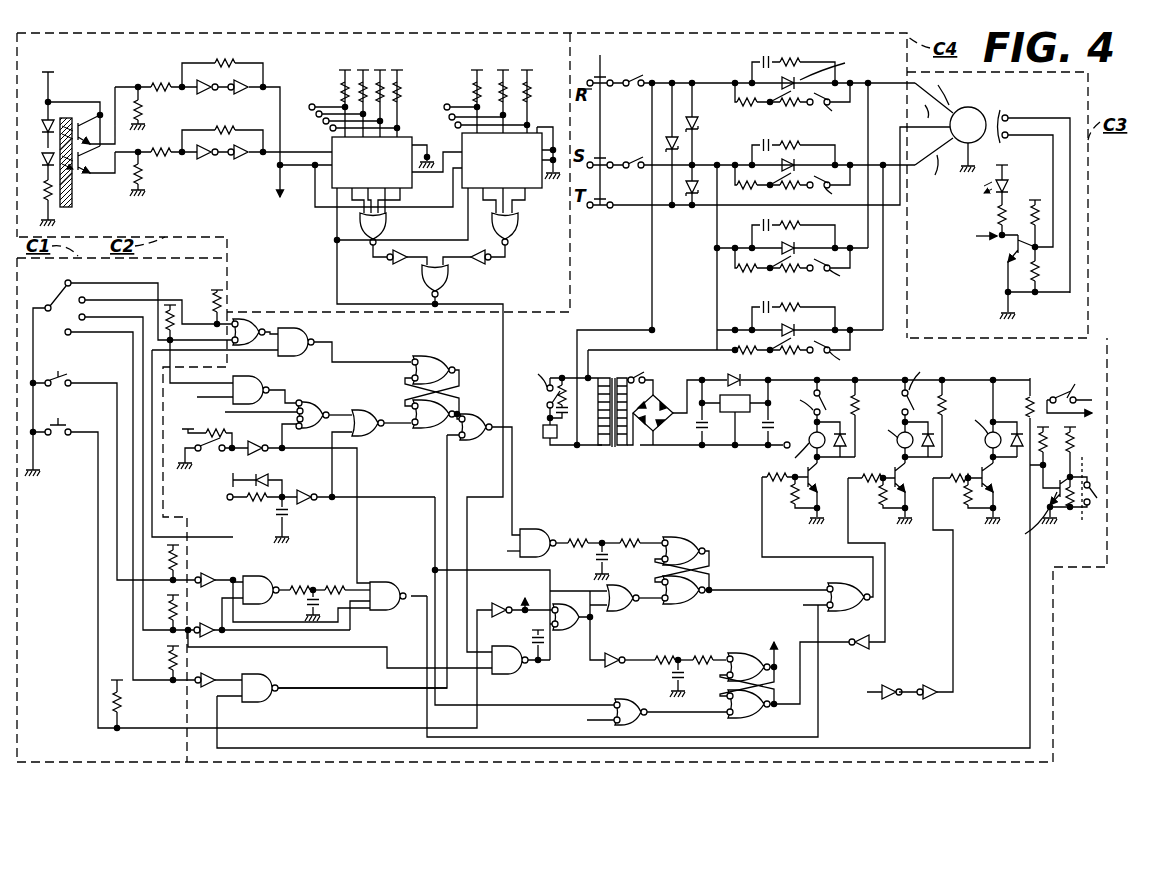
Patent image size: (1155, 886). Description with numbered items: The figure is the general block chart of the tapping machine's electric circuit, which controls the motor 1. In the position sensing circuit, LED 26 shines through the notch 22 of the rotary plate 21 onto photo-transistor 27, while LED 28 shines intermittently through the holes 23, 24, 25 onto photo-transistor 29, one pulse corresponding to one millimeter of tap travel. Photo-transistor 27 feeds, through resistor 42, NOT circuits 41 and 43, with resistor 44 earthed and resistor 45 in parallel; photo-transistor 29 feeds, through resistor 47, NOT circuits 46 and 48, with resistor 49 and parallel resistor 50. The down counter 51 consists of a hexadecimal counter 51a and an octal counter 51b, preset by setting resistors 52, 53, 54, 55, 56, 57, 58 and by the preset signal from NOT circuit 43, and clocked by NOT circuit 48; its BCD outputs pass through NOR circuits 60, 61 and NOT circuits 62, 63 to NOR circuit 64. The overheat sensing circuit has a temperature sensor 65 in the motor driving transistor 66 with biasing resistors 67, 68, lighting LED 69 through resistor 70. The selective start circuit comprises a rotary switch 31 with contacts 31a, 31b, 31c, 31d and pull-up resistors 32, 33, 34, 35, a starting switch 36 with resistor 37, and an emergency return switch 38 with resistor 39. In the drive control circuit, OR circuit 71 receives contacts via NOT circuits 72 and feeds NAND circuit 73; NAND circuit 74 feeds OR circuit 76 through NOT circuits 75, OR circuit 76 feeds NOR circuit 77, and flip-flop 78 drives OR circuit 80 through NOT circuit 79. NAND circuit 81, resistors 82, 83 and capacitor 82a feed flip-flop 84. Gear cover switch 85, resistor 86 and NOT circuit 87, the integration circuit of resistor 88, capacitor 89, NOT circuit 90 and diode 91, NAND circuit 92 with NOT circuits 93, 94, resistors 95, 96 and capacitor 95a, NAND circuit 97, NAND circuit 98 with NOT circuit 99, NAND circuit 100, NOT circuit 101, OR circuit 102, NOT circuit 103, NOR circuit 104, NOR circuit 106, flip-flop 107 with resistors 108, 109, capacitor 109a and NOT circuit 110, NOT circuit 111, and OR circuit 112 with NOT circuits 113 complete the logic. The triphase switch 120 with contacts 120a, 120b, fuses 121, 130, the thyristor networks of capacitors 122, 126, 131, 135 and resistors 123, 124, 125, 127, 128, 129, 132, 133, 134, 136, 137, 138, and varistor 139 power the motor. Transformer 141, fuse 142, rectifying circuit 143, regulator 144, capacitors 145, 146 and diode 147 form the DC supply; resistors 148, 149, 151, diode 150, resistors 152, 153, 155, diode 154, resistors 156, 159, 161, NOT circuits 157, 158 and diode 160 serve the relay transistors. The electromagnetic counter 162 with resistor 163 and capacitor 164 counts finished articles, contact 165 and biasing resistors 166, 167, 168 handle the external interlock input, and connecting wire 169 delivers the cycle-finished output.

The motor 1 is at (974, 110).
The rotary plate 21 is at (65, 207).
The notch 22 is at (83, 134).
The holes 23 is at (74, 178).
The second holes 24 is at (66, 144).
The holes 25 is at (66, 179).
The LED 26 is at (45, 122).
The photo-transistor 27 is at (84, 122).
The LED 28 is at (45, 163).
The photo-transistor 29 is at (83, 167).
The rotary switch 31 is at (55, 300).
The contact for repeating operation 31a is at (72, 285).
The contact for single operation 31b is at (86, 300).
The contact for inching operation 31c is at (86, 317).
The contact for interlocking operation 31d is at (70, 335).
The resistor 32 is at (180, 318).
The resistor 33 is at (213, 295).
The resistor 34 is at (169, 614).
The resistor 35 is at (169, 664).
The starting switch 36 is at (68, 376).
The resistor 37 is at (169, 566).
The emergency return switch 38 is at (62, 426).
The resistor 39 is at (122, 701).
The NOT circuit 41 is at (205, 93).
The resistor 42 is at (157, 84).
The NOT circuit 43 is at (246, 90).
The resistor 44 is at (143, 106).
The resistor 45 is at (226, 60).
The NOT circuit 46 is at (205, 158).
The resistor 47 is at (164, 156).
The NOT circuit 48 is at (243, 157).
The resistor 49 is at (143, 185).
The resistor 50 is at (225, 128).
The down counter 51 is at (450, 127).
The hexadecimal counter 51a is at (410, 178).
The octal counter 51b is at (543, 186).
The resistor for setting 52 is at (340, 100).
The resistor for setting 53 is at (346, 80).
The resistor for setting 54 is at (381, 81).
The resistor for setting 55 is at (400, 100).
The resistor for setting 56 is at (476, 85).
The resistor for setting 57 is at (503, 82).
The resistor for setting 58 is at (528, 85).
The NOR circuit 60 is at (384, 224).
The NOR circuit 61 is at (515, 226).
The NOT circuit 62 is at (398, 264).
The NOT circuit 63 is at (483, 262).
The NOR circuit 64 is at (448, 282).
The temperature sensor 65 is at (1010, 116).
The transistor 66 is at (1010, 258).
The biasing resistor 67 is at (1031, 216).
The biasing resistor 68 is at (1039, 275).
The LED 69 is at (1007, 186).
The resistor 70 is at (998, 216).
The OR circuit 71 is at (258, 326).
The NOT circuit 72 is at (236, 320).
The NAND circuit 73 is at (312, 338).
The NAND circuit 74 is at (256, 380).
The NOT circuit 75 is at (297, 400).
The OR circuit 76 is at (324, 406).
The NOR circuit 77 is at (370, 416).
The flip-flop circuit 78 is at (463, 387).
The NOT circuit 79 is at (462, 438).
The OR circuit 80 is at (477, 415).
The NAND circuit 81 is at (533, 538).
The resistor 82 is at (580, 539).
The capacitor 82a is at (607, 558).
The resistor 83 is at (631, 539).
The flip-flop circuit 84 is at (705, 562).
The gear cover switch 85 is at (205, 452).
The resistor 86 is at (228, 428).
The NOT circuit 87 is at (252, 455).
The resistor 88 is at (255, 502).
The capacitor 89 is at (290, 516).
The NOT circuit 90 is at (310, 503).
The diode 91 is at (268, 477).
The NAND circuit 92 is at (256, 577).
The NOT circuit 93 is at (206, 574).
The NOT circuit 94 is at (206, 624).
The resistor 95 is at (298, 585).
The capacitor 95a is at (308, 603).
The resistor 96 is at (333, 585).
The NAND circuit 97 is at (386, 584).
The NAND circuit 98 is at (270, 676).
The NOT circuit 99 is at (212, 677).
The NAND circuit 100 is at (507, 675).
The NOT circuit 101 is at (558, 605).
The OR circuit 102 is at (546, 641).
The NOT circuit 103 is at (502, 606).
The NOR circuit 104 is at (622, 606).
The NOR circuit 106 is at (640, 715).
The flip-flop circuit 107 is at (755, 655).
The resistor 108 is at (704, 656).
The resistor 109 is at (663, 656).
The charging capacitor 109a is at (671, 675).
The NOT circuit 110 is at (611, 655).
The NOT circuit 111 is at (863, 645).
The OR circuit 112 is at (850, 588).
The NOT circuit 113 is at (619, 664).
The switch of triphase current source 120 is at (600, 58).
The contact 120a is at (633, 79).
The contact 120b is at (620, 162).
The fuse 121 is at (645, 82).
The capacitor 122 is at (764, 57).
The resistor 123 is at (793, 60).
The resistor 124 is at (746, 107).
The resistor 125 is at (791, 107).
The capacitor 126 is at (764, 222).
The resistor 127 is at (798, 224).
The resistor 128 is at (737, 268).
The resistor 129 is at (791, 272).
The fuse 130 is at (636, 170).
The capacitor 131 is at (764, 142).
The resistor 132 is at (793, 144).
The resistor 133 is at (746, 189).
The resistor 134 is at (791, 189).
The capacitor 135 is at (764, 304).
The resistor 136 is at (794, 306).
The resistor 137 is at (745, 346).
The resistor 138 is at (790, 354).
The varistor 139 is at (683, 145).
The transformer 141 is at (617, 380).
The fuse 142 is at (645, 376).
The rectifying circuit 143 is at (660, 436).
The regulator 144 is at (743, 414).
The capacitor 145 is at (706, 432).
The capacitor 146 is at (772, 426).
The diode 147 is at (733, 374).
The resistor 148 is at (767, 479).
The resistor 149 is at (858, 408).
The diode 150 is at (846, 440).
The resistor 151 is at (792, 502).
The resistor 152 is at (869, 484).
The resistor 153 is at (946, 408).
The diode 154 is at (934, 440).
The resistor 155 is at (886, 505).
The resistor 156 is at (956, 483).
The NOT circuit 157 is at (938, 696).
The NOT circuit 158 is at (893, 698).
The resistor 159 is at (1029, 392).
The diode 160 is at (1026, 408).
The resistor 161 is at (970, 506).
The electromagnetic counter 162 is at (543, 436).
The resistor 163 is at (564, 377).
The capacitor 164 is at (565, 415).
The contact 165 is at (1092, 500).
The biasing resistor 166 is at (1048, 441).
The biasing resistor 167 is at (1076, 445).
The biasing resistor 168 is at (1071, 510).
The connecting wire 169 is at (1105, 407).